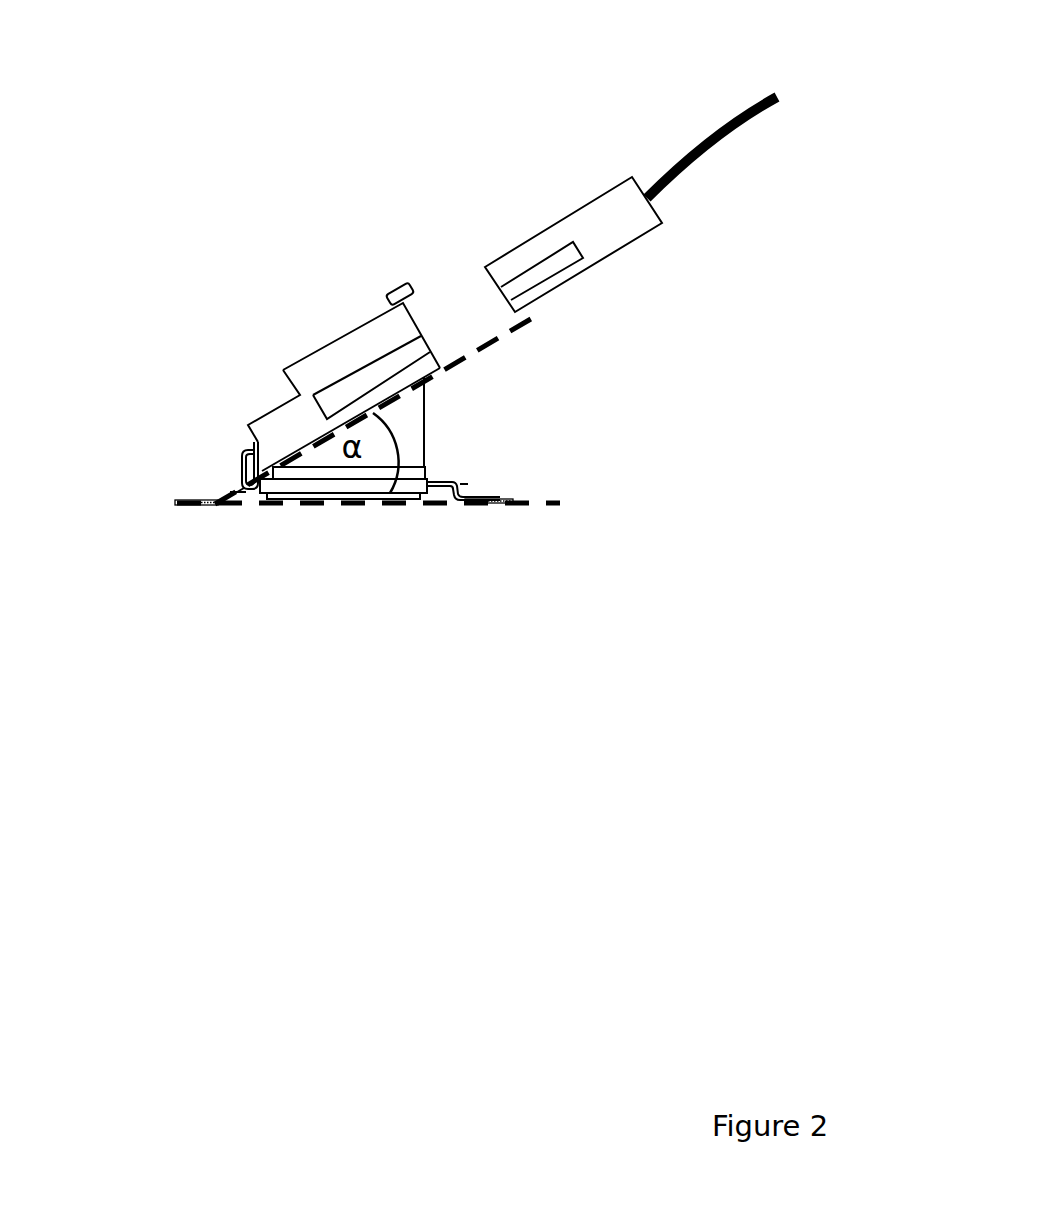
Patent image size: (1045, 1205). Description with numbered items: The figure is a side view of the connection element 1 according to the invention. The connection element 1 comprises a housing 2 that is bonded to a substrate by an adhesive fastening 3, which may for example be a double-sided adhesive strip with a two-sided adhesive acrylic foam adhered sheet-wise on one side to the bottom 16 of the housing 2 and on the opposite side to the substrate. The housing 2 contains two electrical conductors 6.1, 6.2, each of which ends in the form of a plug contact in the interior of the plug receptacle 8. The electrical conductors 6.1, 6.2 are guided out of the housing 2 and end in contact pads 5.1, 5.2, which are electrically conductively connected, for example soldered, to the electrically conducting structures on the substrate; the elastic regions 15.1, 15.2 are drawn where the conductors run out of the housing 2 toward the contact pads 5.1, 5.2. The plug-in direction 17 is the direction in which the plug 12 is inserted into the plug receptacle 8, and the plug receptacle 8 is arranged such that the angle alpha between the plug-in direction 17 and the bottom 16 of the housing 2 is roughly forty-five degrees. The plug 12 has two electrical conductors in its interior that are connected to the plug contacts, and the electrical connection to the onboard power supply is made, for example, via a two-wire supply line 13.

The connection element 1 is at (220, 336).
The housing 2 is at (308, 358).
The adhesive fastening 3 is at (327, 498).
The contact pad 5.1 is at (180, 507).
The contact pad 5.2 is at (500, 495).
The electrical conductor 6.1 is at (230, 493).
The electrical conductor 6.2 is at (240, 458).
The plug receptacle 8 is at (424, 295).
The plug 12 is at (585, 225).
The supply line 13 is at (728, 120).
The elastic region 15.1 is at (237, 492).
The elastic region 15.2 is at (467, 483).
The bottom of the housing 16 is at (308, 521).
The plug-in direction 17 is at (567, 304).